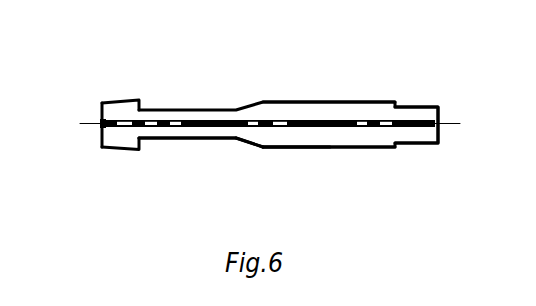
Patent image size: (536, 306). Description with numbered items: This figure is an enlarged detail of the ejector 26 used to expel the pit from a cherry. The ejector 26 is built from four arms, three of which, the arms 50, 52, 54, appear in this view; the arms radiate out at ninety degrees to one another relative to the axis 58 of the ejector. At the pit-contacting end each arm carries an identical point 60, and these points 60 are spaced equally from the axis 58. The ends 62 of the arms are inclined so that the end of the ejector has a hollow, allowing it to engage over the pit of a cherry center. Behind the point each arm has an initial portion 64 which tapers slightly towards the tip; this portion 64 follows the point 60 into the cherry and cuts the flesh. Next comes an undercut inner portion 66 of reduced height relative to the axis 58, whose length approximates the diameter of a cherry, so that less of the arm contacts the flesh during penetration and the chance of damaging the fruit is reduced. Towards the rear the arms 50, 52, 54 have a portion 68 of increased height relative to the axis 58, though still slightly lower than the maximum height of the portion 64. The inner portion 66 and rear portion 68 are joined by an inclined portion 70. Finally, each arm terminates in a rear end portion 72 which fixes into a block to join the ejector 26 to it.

The ejector 26 is at (208, 109).
The arm 50 is at (369, 119).
The arm 52 is at (315, 108).
The arm 54 is at (353, 140).
The axis 58 is at (93, 127).
The point 60 is at (103, 101).
The end 62 is at (101, 110).
The initial portion 64 is at (124, 112).
The inner portion 66 is at (195, 133).
The rear portion 68 is at (303, 140).
The inclined portion 70 is at (257, 139).
The rear end portion 72 is at (417, 137).